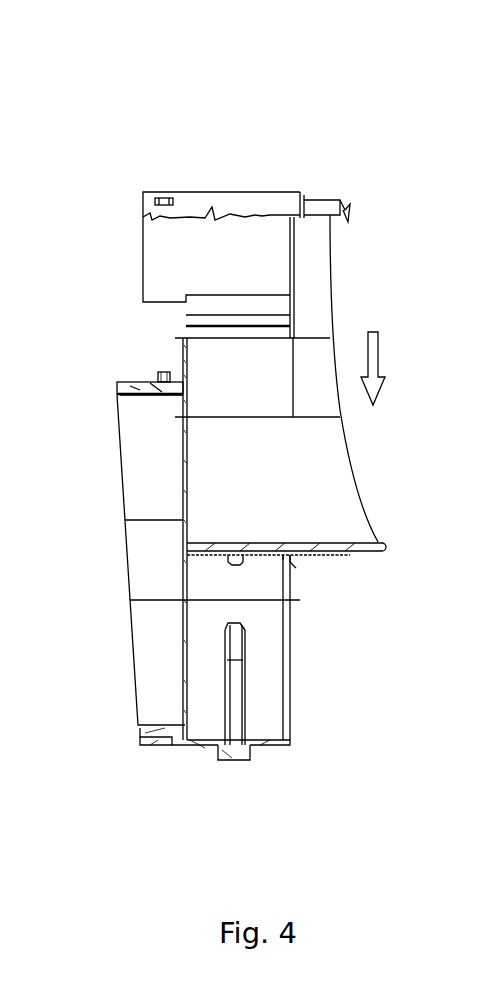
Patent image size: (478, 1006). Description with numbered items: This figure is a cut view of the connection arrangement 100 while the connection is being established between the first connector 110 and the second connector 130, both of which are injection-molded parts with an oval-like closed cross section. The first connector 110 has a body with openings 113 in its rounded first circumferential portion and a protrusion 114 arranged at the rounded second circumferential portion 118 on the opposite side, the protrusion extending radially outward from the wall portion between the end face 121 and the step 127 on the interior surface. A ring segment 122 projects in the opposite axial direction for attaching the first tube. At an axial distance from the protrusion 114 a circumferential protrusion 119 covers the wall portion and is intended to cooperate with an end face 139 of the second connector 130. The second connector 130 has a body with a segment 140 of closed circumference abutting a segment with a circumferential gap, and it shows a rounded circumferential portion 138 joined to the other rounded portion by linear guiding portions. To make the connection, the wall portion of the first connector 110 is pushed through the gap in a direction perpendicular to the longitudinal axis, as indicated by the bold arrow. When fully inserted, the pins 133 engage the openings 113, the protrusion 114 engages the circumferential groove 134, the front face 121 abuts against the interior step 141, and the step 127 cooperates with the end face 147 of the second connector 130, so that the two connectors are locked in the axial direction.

The connection arrangement 100 is at (184, 122).
The first connector 110 is at (300, 192).
The openings 113 is at (167, 197).
The protrusion 114 is at (228, 562).
The rounded second circumferential portion 118 is at (350, 548).
The circumferential protrusion 119 is at (293, 567).
The end face 121 is at (190, 490).
The ring segment 122 is at (340, 200).
The step 127 is at (273, 198).
The second connector 130 is at (124, 378).
The pins 133 is at (158, 372).
The groove 134 is at (232, 750).
The rounded circumferential portion 138 is at (193, 740).
The end face 139 is at (285, 745).
The segment 140 is at (120, 389).
The step 141 is at (200, 727).
The end face 147 is at (178, 388).